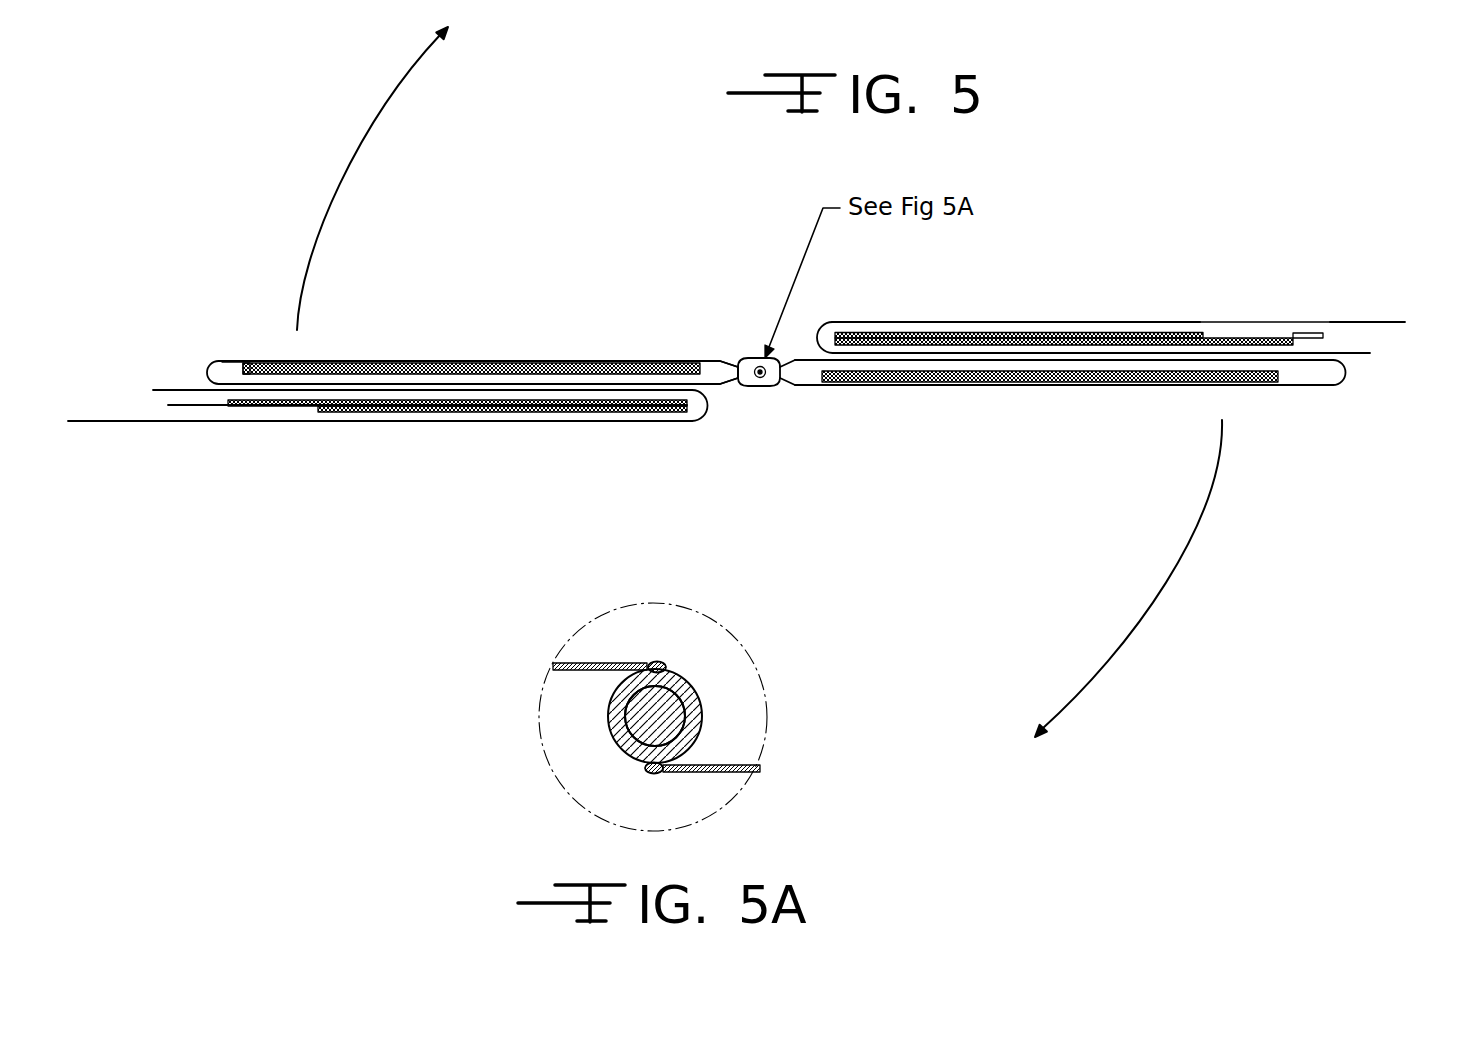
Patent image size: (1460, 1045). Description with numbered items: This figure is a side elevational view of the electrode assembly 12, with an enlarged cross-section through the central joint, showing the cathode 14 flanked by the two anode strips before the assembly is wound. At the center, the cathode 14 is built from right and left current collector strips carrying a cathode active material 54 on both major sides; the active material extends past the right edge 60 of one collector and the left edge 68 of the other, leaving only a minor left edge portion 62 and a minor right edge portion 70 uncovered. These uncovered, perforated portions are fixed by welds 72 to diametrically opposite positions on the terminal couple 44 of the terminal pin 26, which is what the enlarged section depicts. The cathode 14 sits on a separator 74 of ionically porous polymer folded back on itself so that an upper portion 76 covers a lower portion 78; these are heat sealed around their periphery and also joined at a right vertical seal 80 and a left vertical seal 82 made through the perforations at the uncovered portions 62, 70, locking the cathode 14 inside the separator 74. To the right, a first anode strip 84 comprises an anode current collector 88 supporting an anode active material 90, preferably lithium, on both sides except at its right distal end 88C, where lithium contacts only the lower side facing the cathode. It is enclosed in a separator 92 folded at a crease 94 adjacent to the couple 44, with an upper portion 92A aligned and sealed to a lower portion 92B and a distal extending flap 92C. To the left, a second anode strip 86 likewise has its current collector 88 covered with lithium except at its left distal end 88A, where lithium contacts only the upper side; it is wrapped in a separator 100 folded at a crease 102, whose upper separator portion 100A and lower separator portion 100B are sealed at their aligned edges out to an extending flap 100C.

In FIG. 5, the electrode assembly 12 is at (1124, 212).
In FIG. 5, the cathode 14 is at (603, 342).
In FIG. 5A, the terminal pin 26 is at (667, 708).
In FIG. 5, the terminal couple 44 is at (758, 374).
In FIG. 5A, the terminal couple 44 is at (697, 717).
In FIG. 5, the cathode active material 54 is at (322, 362).
In FIG. 5, the right edge 60 is at (1278, 373).
In FIG. 5, the minor left edge portion 62 is at (809, 381).
In FIG. 5A, the minor left edge portion 62 is at (743, 765).
In FIG. 5, the left edge 68 is at (262, 362).
In FIG. 5, the minor right edge portion 70 is at (717, 362).
In FIG. 5A, the minor right edge portion 70 is at (595, 662).
In FIG. 5A, the welds 72 is at (657, 662).
In FIG. 5, the separator 74 is at (1340, 397).
In FIG. 5, the upper portion 76 is at (216, 362).
In FIG. 5, the lower portion 78 is at (226, 368).
In FIG. 5, the right vertical seal 80 is at (781, 372).
In FIG. 5, the left vertical seal 82 is at (739, 366).
In FIG. 5, the first anode strip 84 is at (1084, 306).
In FIG. 5, the second anode strip 86 is at (514, 449).
In FIG. 5, the anode current collector 88 is at (191, 408).
In FIG. 5, the left distal end 88A is at (280, 407).
In FIG. 5, the right distal end 88C is at (1240, 340).
In FIG. 5, the anode active material 90 is at (374, 402).
In FIG. 5, the separator 92 is at (970, 322).
In FIG. 5, the upper portion 92A is at (1153, 323).
In FIG. 5, the lower portion 92B is at (1100, 354).
In FIG. 5, the extending flap 92C is at (1400, 323).
In FIG. 5, the crease 94 is at (820, 335).
In FIG. 5, the separator 100 is at (270, 424).
In FIG. 5, the upper separator portion 100A is at (462, 389).
In FIG. 5, the lower separator portion 100B is at (403, 423).
In FIG. 5, the extending flap 100C is at (112, 423).
In FIG. 5, the crease 102 is at (703, 405).